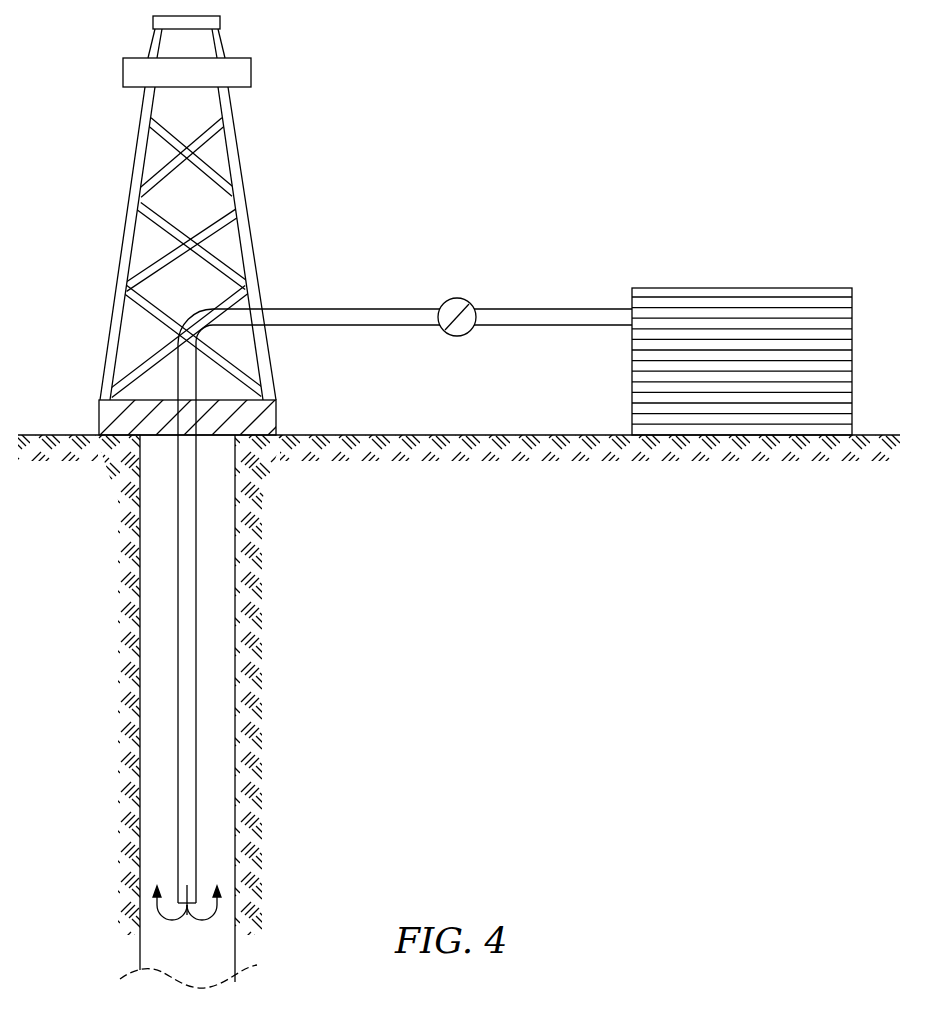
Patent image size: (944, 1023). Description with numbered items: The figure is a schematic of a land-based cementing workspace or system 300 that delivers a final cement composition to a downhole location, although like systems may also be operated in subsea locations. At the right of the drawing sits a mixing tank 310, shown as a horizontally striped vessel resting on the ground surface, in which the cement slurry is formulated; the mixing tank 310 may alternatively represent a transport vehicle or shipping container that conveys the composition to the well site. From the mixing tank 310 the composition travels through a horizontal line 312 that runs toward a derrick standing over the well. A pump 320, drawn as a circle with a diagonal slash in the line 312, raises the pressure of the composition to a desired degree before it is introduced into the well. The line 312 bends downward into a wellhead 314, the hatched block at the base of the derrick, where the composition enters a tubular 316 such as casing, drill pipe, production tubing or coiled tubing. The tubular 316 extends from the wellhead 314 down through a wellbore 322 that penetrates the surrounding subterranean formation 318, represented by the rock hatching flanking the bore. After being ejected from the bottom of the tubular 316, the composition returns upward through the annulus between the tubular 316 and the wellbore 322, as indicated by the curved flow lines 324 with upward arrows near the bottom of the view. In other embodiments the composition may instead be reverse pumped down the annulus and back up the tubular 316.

The cementing workspace or system 300 is at (616, 94).
The mixing tank 310 is at (733, 288).
The line 312 is at (370, 309).
The wellhead 314 is at (99, 420).
The tubular 316 is at (197, 587).
The subterranean formation 318 is at (96, 598).
The pump 320 is at (462, 298).
The wellbore 322 is at (240, 765).
The flow lines 324 is at (157, 915).